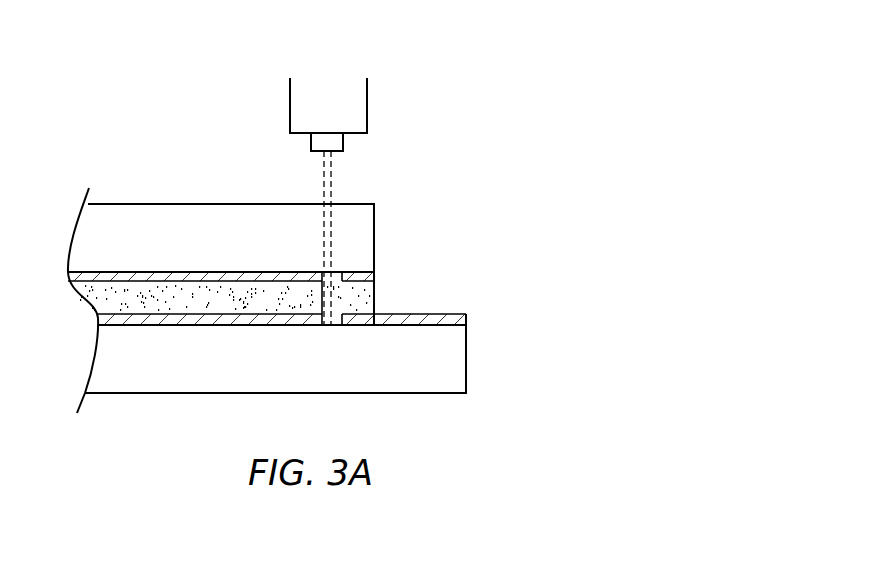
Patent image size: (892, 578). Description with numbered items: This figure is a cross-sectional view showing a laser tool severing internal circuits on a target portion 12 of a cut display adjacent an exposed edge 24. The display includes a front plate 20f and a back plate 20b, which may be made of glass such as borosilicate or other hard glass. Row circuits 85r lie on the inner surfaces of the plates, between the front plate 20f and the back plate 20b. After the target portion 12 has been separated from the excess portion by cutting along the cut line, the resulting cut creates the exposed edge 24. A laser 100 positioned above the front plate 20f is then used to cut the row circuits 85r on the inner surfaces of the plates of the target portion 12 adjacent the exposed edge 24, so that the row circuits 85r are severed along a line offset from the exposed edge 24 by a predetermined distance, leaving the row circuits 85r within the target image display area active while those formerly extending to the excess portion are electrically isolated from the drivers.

The laser 100 is at (376, 101).
The target portion 12 is at (486, 234).
The front plate 20f is at (168, 204).
The exposed edge 24 is at (374, 252).
The row circuits 85r is at (363, 281).
The back plate 20b is at (466, 352).